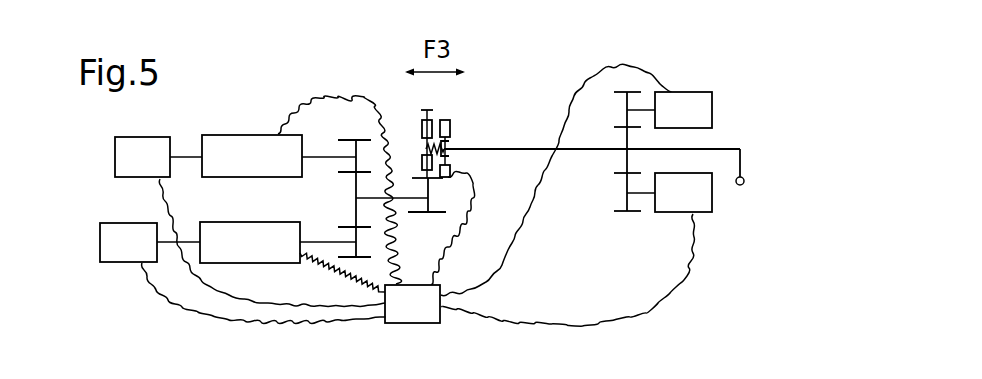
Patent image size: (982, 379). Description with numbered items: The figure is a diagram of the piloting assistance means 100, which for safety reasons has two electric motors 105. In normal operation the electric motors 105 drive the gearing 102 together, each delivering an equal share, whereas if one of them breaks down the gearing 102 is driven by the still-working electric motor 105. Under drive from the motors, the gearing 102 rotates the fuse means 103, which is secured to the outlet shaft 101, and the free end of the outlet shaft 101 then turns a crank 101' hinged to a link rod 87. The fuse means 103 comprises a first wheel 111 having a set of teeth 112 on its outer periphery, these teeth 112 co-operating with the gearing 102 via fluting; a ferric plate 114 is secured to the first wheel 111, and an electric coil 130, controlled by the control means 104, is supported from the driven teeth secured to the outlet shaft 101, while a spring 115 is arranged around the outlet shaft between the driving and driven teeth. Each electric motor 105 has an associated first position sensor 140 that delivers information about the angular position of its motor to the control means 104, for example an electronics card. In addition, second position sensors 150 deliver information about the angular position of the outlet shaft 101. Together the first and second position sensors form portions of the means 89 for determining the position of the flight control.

The piloting assistance means 100 is at (217, 116).
The first position sensor 140 is at (163, 167).
The electric motor 105 is at (273, 166).
The control means 104 is at (433, 314).
The gearing 102 is at (355, 126).
The fuse means 103 is at (398, 62).
The first wheel 111 is at (425, 120).
The ferric plate 114 is at (440, 118).
The electric coil 130 is at (446, 120).
The teeth 112 is at (421, 178).
The spring 115 is at (447, 150).
The means for determining the position of the flight control 89 is at (705, 70).
The second position sensor 150 is at (703, 122).
The outlet shaft 101 is at (664, 118).
The crank 101' is at (786, 166).
The link rod 87 is at (740, 186).